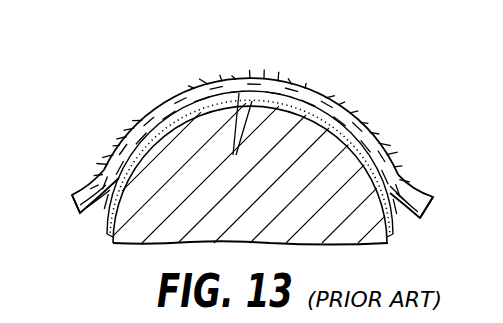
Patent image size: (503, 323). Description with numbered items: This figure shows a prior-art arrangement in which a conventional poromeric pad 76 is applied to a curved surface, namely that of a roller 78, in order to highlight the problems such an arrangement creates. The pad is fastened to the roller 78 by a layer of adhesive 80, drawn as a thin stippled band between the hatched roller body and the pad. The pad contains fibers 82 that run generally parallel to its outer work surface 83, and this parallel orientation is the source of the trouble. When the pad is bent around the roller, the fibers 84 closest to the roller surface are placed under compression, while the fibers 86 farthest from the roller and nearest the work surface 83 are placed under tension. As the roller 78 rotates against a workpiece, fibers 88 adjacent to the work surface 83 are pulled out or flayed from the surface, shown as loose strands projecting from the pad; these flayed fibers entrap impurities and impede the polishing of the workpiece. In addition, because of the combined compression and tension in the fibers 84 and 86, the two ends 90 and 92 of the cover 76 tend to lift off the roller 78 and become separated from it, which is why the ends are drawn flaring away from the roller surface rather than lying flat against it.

The poromeric pad 76 is at (264, 148).
The roller 78 is at (167, 229).
The adhesive 80 is at (397, 225).
The fibers 82 is at (315, 98).
The work surface 83 is at (108, 160).
The fibers 84 is at (245, 136).
The fibers 86 is at (333, 101).
The fibers 88 is at (244, 75).
The end 90 is at (75, 201).
The end 92 is at (428, 199).